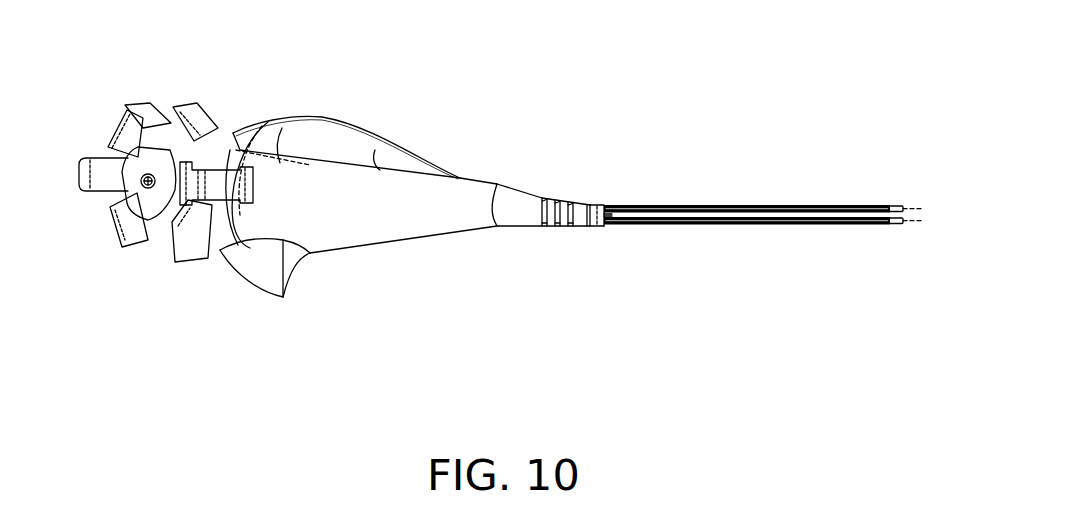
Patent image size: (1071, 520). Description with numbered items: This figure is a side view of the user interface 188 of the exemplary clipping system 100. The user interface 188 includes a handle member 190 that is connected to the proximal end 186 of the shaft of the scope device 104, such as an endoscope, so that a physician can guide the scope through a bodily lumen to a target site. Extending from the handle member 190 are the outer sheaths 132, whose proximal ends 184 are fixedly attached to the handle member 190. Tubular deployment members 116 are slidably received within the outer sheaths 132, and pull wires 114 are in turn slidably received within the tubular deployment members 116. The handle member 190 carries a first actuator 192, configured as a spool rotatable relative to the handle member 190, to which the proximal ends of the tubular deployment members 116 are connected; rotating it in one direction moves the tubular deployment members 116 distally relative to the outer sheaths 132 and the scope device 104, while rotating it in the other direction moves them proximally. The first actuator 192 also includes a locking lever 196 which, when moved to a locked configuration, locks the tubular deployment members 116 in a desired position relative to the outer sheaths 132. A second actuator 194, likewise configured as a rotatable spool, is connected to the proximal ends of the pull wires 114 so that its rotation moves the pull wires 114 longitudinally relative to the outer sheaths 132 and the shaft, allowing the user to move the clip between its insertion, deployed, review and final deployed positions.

The clipping system 100 is at (775, 93).
The scope device 104 is at (747, 203).
The pull wires 114 is at (902, 225).
The tubular deployment members 116 is at (897, 205).
The outer sheaths 132 is at (615, 225).
The proximal end of outer sheath 184 is at (612, 203).
The proximal end of shaft 186 is at (598, 220).
The user interface 188 is at (458, 93).
The handle member 190 is at (417, 195).
The first actuator 192 is at (218, 122).
The second actuator 194 is at (157, 125).
The locking lever 196 is at (268, 122).